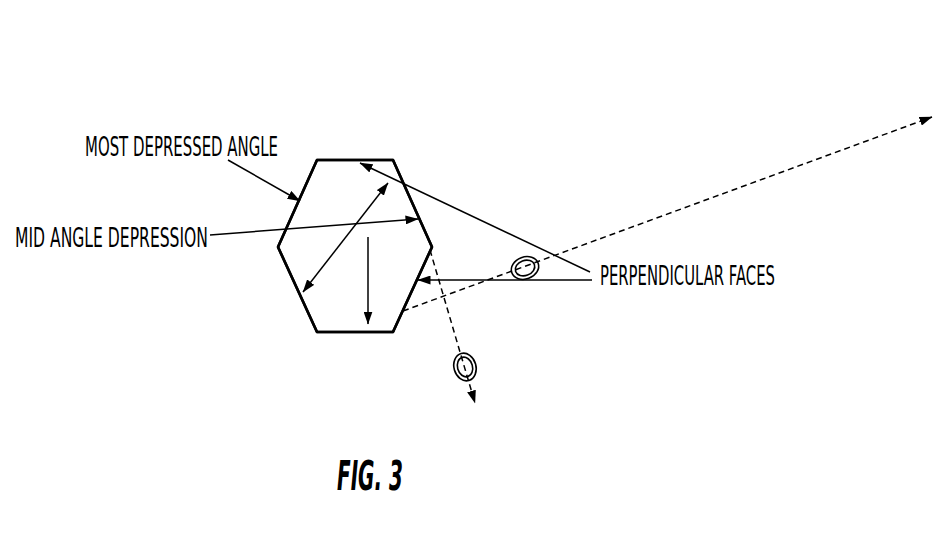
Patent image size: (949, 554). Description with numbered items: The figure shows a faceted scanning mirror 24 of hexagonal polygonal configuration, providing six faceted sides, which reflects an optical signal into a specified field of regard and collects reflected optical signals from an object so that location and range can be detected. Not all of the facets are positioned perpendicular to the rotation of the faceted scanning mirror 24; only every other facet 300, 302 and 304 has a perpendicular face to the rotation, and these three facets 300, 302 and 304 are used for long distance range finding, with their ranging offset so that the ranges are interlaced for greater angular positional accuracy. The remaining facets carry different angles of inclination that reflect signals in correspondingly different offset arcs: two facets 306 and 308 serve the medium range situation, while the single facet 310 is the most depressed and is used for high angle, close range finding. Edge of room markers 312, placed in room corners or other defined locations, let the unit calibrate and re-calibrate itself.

The faceted scanning mirror 24 is at (563, 83).
The facet 300 is at (342, 160).
The facet 302 is at (410, 292).
The facet 304 is at (293, 280).
The facet 306 is at (400, 173).
The facet 308 is at (353, 333).
The facet 310 is at (292, 213).
The edge of room marker 312 is at (518, 257).